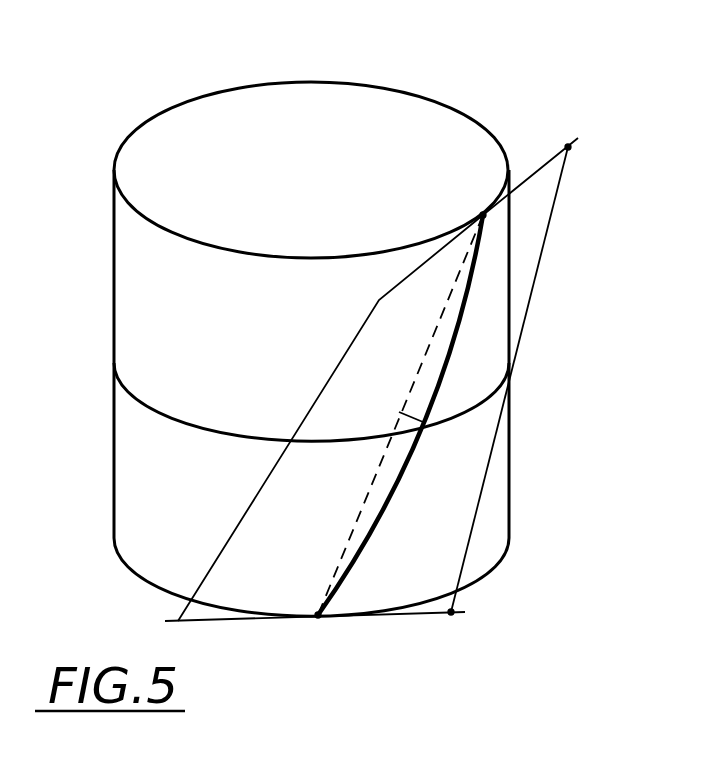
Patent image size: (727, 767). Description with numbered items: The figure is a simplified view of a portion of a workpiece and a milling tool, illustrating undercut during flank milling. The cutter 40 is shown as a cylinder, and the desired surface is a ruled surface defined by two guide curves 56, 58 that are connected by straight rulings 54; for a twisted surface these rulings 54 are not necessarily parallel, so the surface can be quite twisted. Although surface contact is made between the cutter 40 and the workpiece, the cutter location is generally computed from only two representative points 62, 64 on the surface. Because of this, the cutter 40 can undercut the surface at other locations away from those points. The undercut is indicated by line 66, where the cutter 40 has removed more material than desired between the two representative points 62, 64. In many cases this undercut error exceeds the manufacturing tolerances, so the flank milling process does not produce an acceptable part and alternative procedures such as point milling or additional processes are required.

The cutter 40 is at (240, 165).
The straight lines (rulings) 54 is at (340, 362).
The guide curve 56 is at (537, 170).
The guide curve 58 is at (458, 587).
The representative point 62 is at (318, 615).
The representative point 64 is at (483, 215).
The undercut line 66 is at (410, 468).